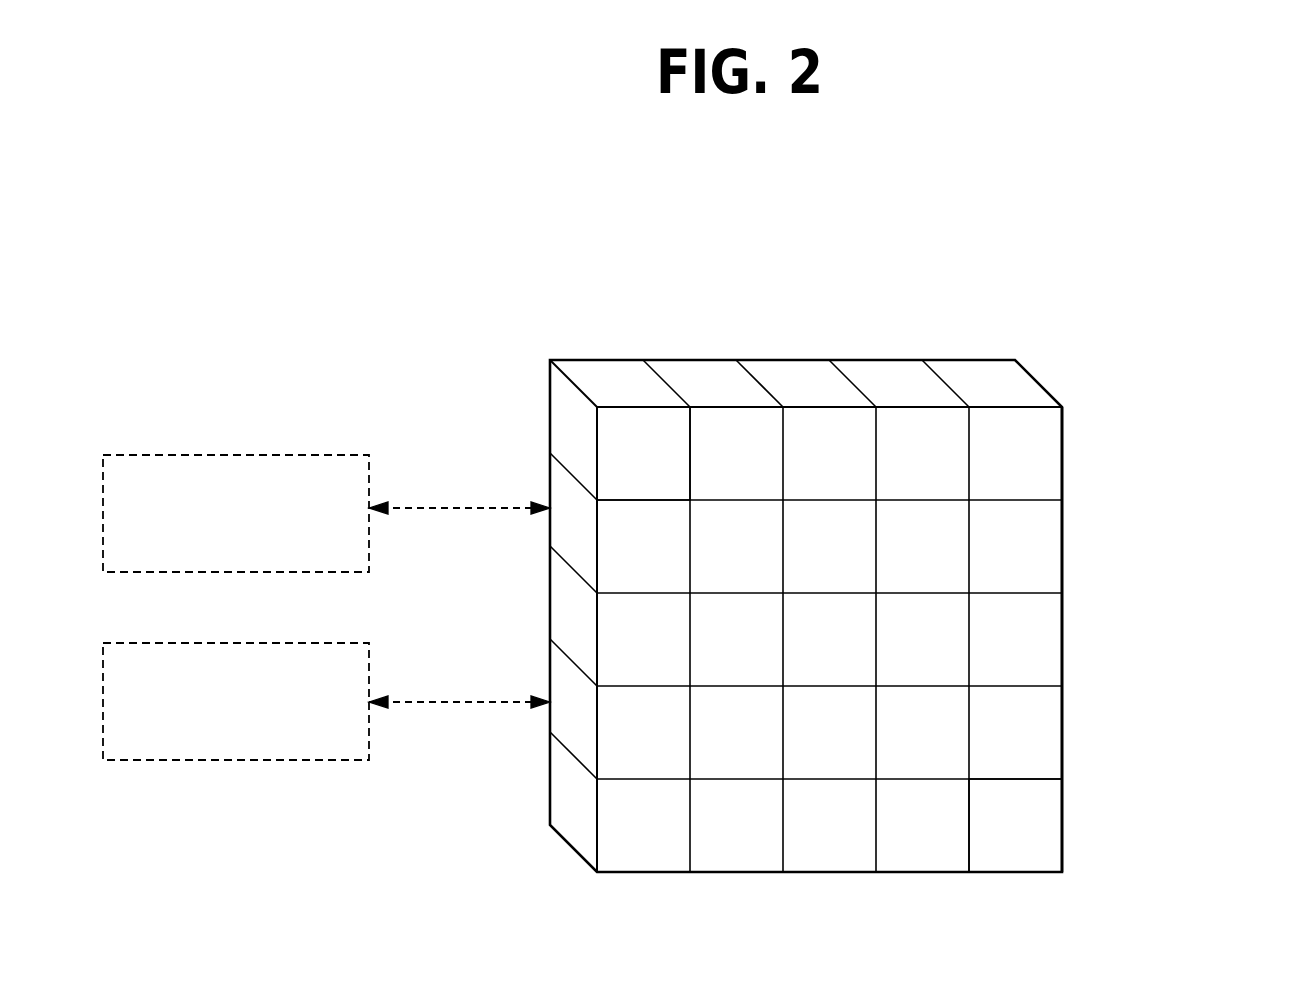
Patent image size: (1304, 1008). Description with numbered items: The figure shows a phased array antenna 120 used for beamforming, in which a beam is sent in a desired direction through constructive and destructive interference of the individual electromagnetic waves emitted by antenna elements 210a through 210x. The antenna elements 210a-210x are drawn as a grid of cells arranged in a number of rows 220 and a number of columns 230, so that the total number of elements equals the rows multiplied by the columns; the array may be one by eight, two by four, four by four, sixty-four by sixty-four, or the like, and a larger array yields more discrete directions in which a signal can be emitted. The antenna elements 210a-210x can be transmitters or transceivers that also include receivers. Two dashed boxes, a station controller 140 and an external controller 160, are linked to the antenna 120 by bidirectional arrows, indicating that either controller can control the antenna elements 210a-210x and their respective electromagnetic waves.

The antenna 120 is at (1145, 335).
The station controller 140 is at (227, 453).
The external controller 160 is at (227, 762).
The antenna element 210a is at (668, 473).
The antenna element 210x is at (1040, 838).
The rows 220 is at (1120, 639).
The columns 230 is at (824, 342).